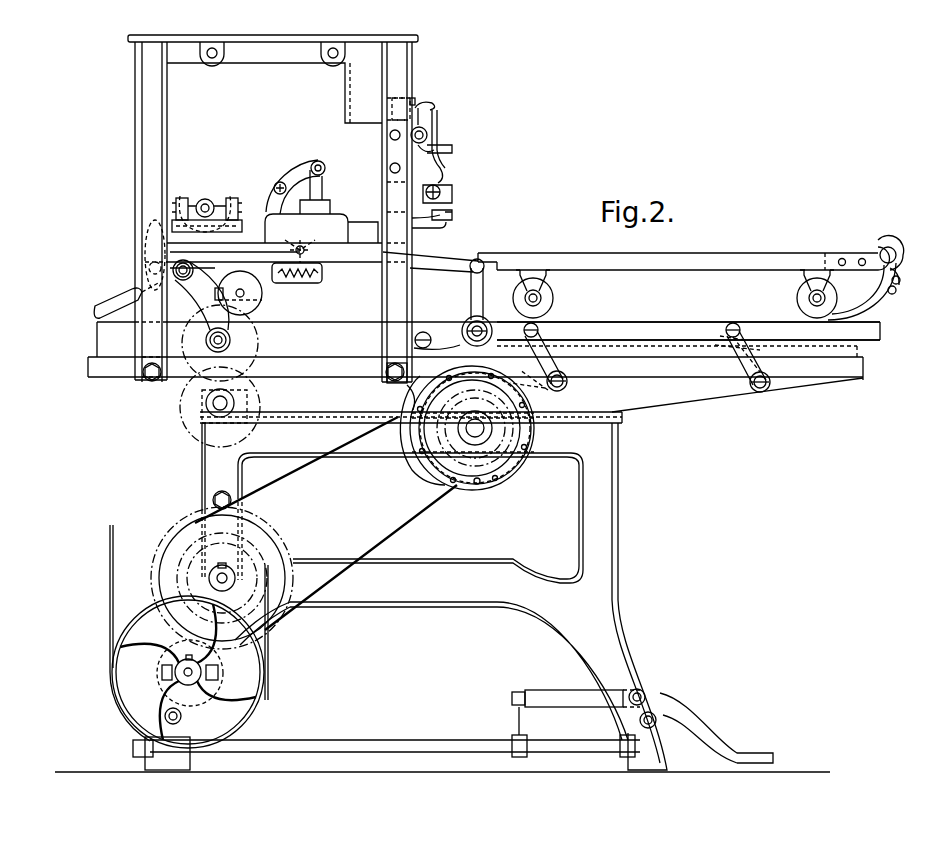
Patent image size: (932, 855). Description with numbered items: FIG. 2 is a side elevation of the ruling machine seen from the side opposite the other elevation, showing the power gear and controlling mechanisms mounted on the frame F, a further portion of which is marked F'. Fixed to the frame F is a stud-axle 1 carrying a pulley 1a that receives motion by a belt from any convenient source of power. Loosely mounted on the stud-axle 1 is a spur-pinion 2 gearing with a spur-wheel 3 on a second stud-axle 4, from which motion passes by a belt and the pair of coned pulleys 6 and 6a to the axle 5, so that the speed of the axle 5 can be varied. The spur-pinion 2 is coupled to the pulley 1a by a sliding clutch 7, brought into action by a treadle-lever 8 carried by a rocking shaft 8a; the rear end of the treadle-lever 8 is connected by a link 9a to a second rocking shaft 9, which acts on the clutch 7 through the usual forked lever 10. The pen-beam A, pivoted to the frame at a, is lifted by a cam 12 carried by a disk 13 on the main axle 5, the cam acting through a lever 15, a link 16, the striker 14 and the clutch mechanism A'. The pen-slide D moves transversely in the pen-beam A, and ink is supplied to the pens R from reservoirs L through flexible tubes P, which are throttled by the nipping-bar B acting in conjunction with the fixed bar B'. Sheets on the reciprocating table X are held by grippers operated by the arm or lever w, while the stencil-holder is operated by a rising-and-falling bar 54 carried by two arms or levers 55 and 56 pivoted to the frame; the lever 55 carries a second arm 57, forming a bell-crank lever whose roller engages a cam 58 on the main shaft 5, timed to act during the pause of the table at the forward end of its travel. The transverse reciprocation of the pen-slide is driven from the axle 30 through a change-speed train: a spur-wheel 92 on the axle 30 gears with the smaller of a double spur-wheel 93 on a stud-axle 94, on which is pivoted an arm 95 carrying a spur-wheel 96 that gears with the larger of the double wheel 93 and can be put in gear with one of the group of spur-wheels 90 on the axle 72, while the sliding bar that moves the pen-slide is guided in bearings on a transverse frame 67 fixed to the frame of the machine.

The frame F is at (442, 403).
The frame plate edge F' is at (737, 405).
The reciprocating table X is at (691, 249).
The arm or lever w is at (865, 302).
The rising-and-falling bar 54 is at (760, 326).
The arm or lever 55 is at (548, 350).
The arm or lever 56 is at (748, 350).
The second arm 57 is at (545, 392).
The cam 58 is at (405, 394).
The striker 14 is at (448, 266).
The lever 15 is at (434, 334).
The link 16 is at (473, 298).
The axle 5 is at (466, 428).
The cam 12 is at (408, 436).
The disk 13 is at (498, 475).
The coned pulley 6a is at (452, 478).
The spur-wheel 3 is at (287, 620).
The coned pulley 6 is at (272, 545).
The second stud-axle 4 is at (227, 585).
The stud-axle 1 is at (168, 672).
The pulley 1a is at (150, 662).
The spur-pinion 2 is at (218, 670).
The sliding clutch 7 is at (215, 680).
The forked lever 10 is at (205, 688).
The second rocking shaft 9 is at (392, 748).
The link 9a is at (518, 736).
The rocking shaft 8a is at (652, 692).
The treadle-lever 8 is at (680, 714).
The axle 72 is at (206, 200).
The group of spur-wheels 90 is at (200, 196).
The transverse frame 67 is at (181, 203).
The clutch mechanism A' is at (289, 187).
The pen-beam A is at (348, 207).
The pivot a is at (338, 274).
The spur-wheel 96 is at (218, 252).
The arm 95 is at (192, 278).
The double spur-wheel 93 is at (258, 312).
The stud-axle 94 is at (232, 342).
The spur-wheel 92 is at (262, 385).
The axle 30 is at (206, 402).
The reservoirs L is at (414, 103).
The nipping-bar B is at (437, 126).
The fixed bar B' is at (462, 157).
The flexible tubes P is at (438, 171).
The pen-slide D is at (455, 212).
The pens R is at (460, 212).